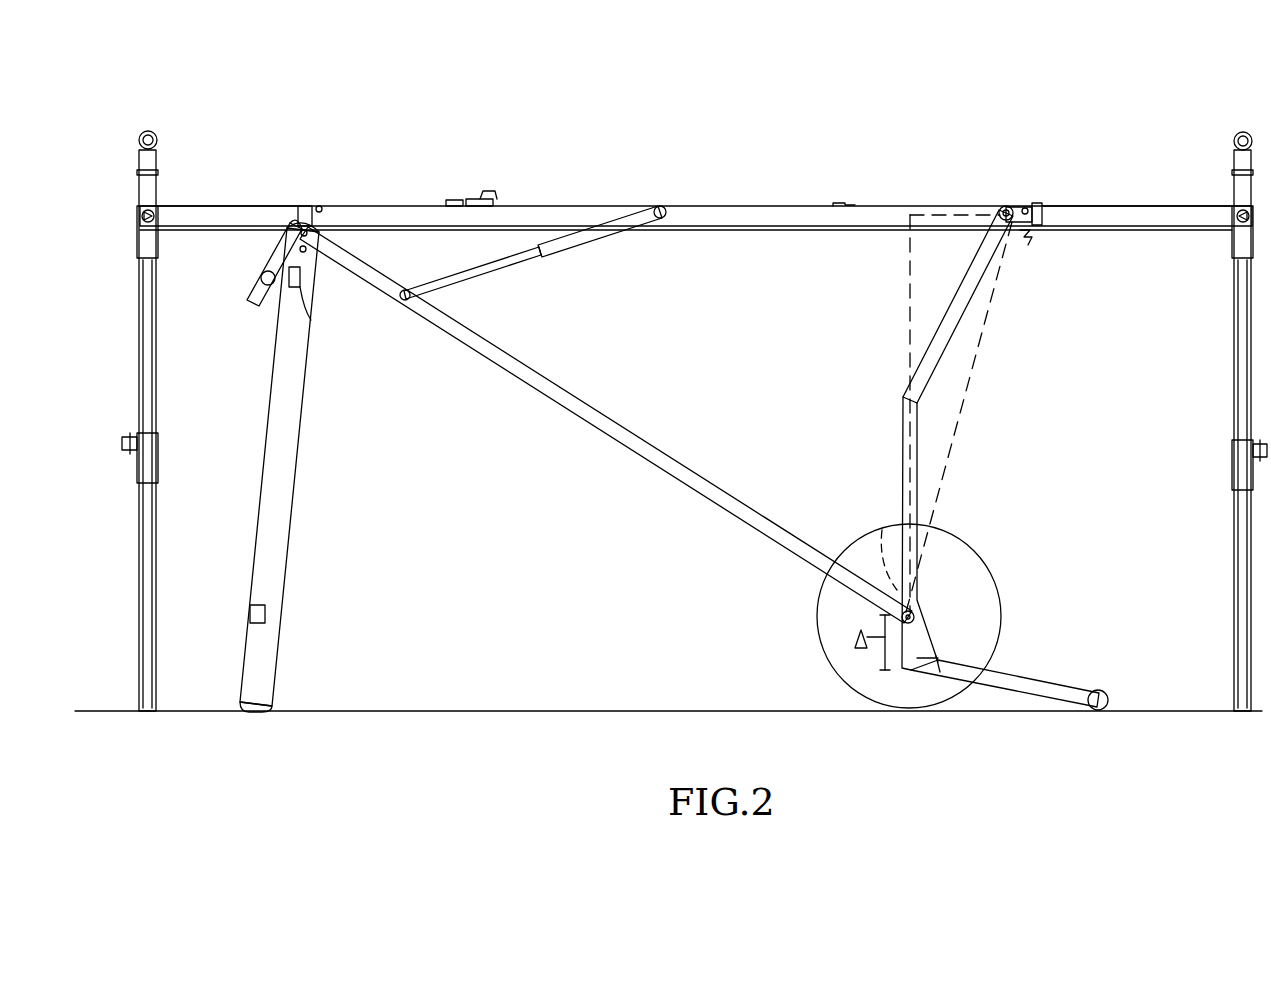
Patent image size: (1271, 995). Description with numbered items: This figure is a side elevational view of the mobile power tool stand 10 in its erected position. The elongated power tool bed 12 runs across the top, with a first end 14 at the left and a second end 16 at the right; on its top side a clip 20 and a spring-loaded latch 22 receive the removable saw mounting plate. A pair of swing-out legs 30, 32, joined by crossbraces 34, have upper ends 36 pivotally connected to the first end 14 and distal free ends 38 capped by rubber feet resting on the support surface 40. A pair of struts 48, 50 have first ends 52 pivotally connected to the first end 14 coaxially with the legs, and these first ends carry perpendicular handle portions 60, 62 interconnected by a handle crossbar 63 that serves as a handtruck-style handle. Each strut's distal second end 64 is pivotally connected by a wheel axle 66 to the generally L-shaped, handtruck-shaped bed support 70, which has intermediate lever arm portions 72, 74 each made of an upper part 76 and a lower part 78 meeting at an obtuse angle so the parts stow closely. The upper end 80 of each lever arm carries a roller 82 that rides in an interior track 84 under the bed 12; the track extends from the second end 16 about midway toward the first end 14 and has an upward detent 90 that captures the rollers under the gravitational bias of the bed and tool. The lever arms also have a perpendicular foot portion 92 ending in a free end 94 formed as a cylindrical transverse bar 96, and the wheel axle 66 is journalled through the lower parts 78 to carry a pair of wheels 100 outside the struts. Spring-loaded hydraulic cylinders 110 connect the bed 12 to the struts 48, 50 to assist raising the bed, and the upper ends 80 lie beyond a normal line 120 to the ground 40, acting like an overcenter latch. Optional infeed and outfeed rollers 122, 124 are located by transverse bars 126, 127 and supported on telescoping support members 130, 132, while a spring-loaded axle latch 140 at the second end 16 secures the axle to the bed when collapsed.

The power tool stand 10 is at (1034, 71).
The power tool bed 12 is at (696, 197).
The first end 14 is at (318, 207).
The second end 16 is at (1025, 208).
The clip 20 is at (841, 203).
The spring-loaded latch 22 is at (488, 199).
The swing-out leg 30 is at (315, 467).
The swing-out leg 32 is at (315, 467).
The crossbrace 34 is at (300, 285).
The upper end 36 is at (312, 233).
The distal free end 38 is at (272, 708).
The support surface 40 is at (600, 708).
The strut 48 is at (606, 425).
The strut 50 is at (608, 410).
The first end 52 is at (266, 236).
The handle portion 60 is at (239, 281).
The handle portion 62 is at (239, 281).
The handle crossbar 63 is at (261, 278).
The distal second end 64 is at (887, 540).
The wheel axle 66 is at (915, 612).
The bed support 70 is at (979, 448).
The intermediate lever arm portion 72 is at (986, 417).
The intermediate lever arm portion 74 is at (965, 330).
The upper part 76 is at (952, 290).
The lower part 78 is at (902, 440).
The upper end 80 is at (1001, 228).
The roller 82 is at (1045, 220).
The interior track 84 is at (958, 213).
The detent 90 is at (1005, 207).
The foot portion 92 is at (1005, 675).
The foot portion free end 94 is at (1126, 695).
The transverse bar 96 is at (1103, 712).
The wheel 100 is at (970, 535).
The spring-loaded hydraulic cylinder 110 is at (585, 241).
The normal line 120 is at (908, 292).
The roller 122 is at (1234, 140).
The roller 124 is at (156, 134).
The transverse bar 126 is at (1112, 206).
The transverse bar 127 is at (212, 205).
The telescoping support member 130 is at (1237, 340).
The telescoping support member 132 is at (152, 355).
The spring-loaded axle latch 140 is at (1035, 237).